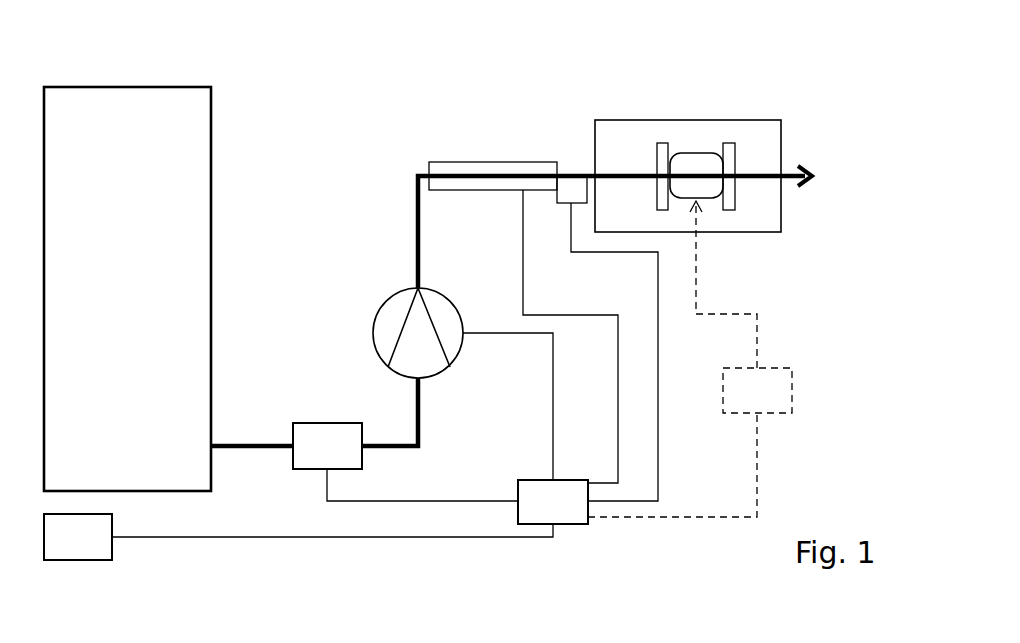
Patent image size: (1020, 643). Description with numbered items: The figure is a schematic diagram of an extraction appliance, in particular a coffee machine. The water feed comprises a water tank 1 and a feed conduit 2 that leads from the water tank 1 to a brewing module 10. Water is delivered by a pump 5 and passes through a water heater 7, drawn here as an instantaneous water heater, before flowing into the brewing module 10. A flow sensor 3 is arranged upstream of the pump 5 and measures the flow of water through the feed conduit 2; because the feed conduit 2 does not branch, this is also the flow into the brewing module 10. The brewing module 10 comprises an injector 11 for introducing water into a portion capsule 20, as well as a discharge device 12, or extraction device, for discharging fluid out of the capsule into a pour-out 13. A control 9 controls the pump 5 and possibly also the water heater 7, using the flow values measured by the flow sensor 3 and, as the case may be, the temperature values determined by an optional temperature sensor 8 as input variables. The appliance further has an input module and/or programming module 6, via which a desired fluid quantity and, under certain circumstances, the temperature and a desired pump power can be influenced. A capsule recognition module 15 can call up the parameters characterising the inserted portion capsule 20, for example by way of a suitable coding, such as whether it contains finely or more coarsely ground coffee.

The water tank 1 is at (183, 162).
The feed conduit 2 is at (261, 443).
The flow sensor 3 is at (315, 437).
The pump 5 is at (390, 312).
The input module and/or programming module 6 is at (105, 537).
The heater 7 is at (467, 167).
The temperature sensor 8 is at (565, 191).
The control 9 is at (570, 517).
The brewing module 10 is at (794, 106).
The injector 11 is at (662, 163).
The discharge device 12 is at (731, 157).
The pour-out 13 is at (793, 185).
The capsule recognition module 15 is at (775, 380).
The portion capsule 20 is at (692, 178).